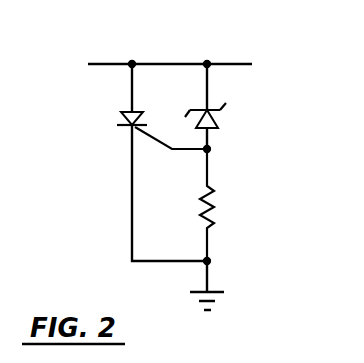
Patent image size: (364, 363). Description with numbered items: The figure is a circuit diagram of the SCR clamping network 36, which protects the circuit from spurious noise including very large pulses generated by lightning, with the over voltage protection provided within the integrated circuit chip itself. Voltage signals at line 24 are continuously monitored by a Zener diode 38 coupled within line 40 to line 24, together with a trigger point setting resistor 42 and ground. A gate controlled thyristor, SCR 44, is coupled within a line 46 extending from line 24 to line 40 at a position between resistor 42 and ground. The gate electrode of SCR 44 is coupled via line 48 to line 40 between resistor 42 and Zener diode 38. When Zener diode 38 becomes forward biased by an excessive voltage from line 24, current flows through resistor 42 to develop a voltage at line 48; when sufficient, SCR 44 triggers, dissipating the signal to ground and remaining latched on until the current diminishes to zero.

The line 24 is at (121, 64).
The SCR clamping network 36 is at (286, 130).
The Zener diode 38 is at (216, 124).
The line 40 is at (208, 84).
The trigger point setting resistor 42 is at (218, 203).
The SCR 44 is at (118, 122).
The line 46 is at (132, 221).
The line 48 is at (178, 150).